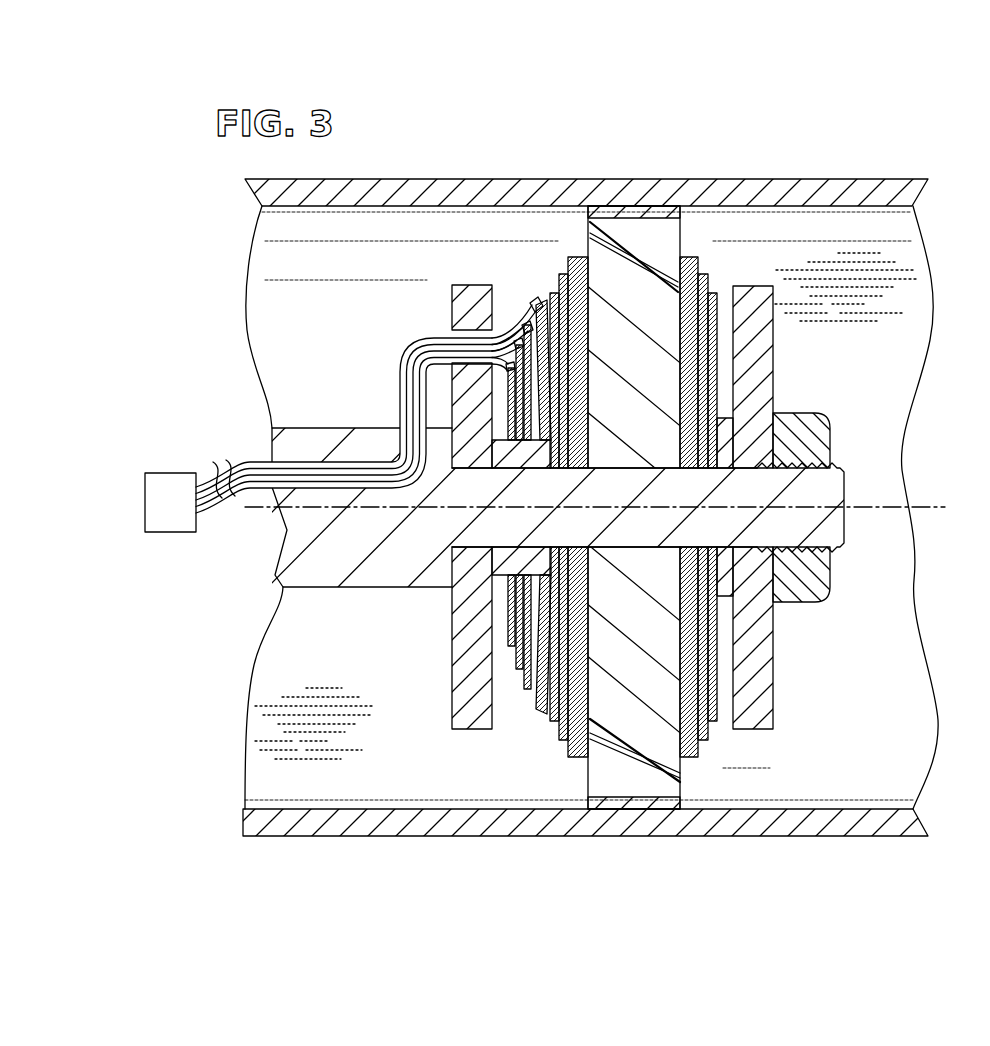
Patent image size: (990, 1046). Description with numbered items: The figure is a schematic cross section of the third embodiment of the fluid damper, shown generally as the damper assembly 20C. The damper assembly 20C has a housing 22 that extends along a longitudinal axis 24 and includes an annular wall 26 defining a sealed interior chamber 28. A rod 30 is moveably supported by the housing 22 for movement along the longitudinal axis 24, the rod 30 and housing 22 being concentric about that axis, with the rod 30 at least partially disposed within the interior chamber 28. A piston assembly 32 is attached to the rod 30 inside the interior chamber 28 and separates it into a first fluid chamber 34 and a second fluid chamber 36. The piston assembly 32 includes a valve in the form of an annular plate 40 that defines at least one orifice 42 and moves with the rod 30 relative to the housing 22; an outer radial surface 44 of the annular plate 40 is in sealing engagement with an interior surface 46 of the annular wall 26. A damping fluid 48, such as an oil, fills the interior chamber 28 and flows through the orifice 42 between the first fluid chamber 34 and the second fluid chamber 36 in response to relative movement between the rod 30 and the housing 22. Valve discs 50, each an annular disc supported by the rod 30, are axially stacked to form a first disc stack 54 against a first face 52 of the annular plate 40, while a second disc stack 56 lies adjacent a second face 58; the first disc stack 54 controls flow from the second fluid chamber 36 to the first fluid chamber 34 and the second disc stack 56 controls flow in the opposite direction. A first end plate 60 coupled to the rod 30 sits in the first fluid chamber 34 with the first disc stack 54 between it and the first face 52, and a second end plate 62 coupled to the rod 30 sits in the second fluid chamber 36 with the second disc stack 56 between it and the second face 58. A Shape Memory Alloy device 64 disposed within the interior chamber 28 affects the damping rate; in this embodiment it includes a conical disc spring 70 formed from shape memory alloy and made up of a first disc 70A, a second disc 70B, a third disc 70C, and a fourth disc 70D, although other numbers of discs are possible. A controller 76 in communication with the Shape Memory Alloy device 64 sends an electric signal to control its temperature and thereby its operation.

The damper assembly 20C is at (868, 132).
The housing 22 is at (334, 178).
The longitudinal axis 24 is at (256, 503).
The annular wall 26 is at (384, 192).
The interior chamber 28 is at (306, 330).
The rod 30 is at (308, 585).
The piston assembly 32 is at (735, 232).
The first fluid chamber 34 is at (398, 767).
The second fluid chamber 36 is at (876, 700).
The annular plate 40 is at (703, 724).
The orifice 42 is at (648, 250).
The outer radial surface 44 is at (627, 204).
The interior surface 46 is at (418, 206).
The damping fluid 48 is at (853, 323).
The valve disc 50 is at (575, 252).
The first face 52 is at (583, 785).
The first disc stack 54 is at (547, 722).
The second disc stack 56 is at (700, 263).
The second face 58 is at (687, 255).
The first end plate 60 is at (465, 732).
The second end plate 62 is at (762, 732).
The Shape Memory Alloy device 64 is at (527, 302).
The conical disc spring 70 is at (451, 545).
The first disc 70A is at (510, 642).
The second disc 70B is at (520, 667).
The third disc 70C is at (530, 690).
The fourth disc 70D is at (546, 716).
The controller 76 is at (175, 483).